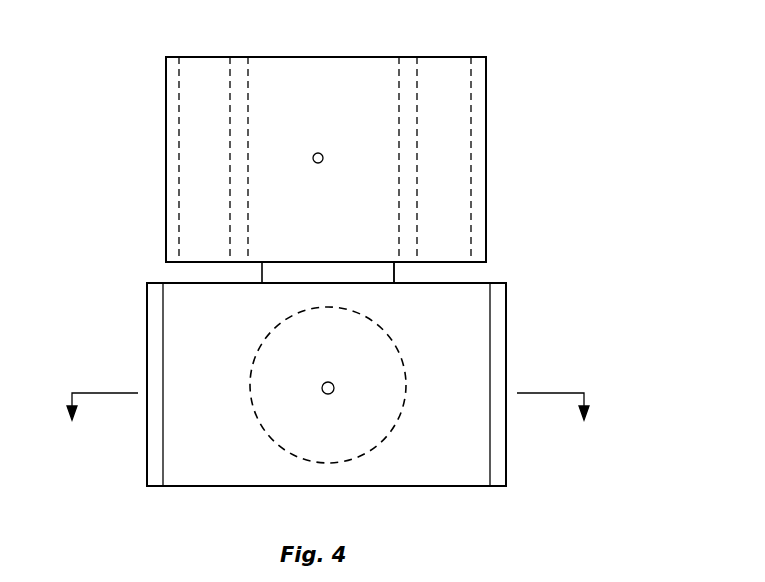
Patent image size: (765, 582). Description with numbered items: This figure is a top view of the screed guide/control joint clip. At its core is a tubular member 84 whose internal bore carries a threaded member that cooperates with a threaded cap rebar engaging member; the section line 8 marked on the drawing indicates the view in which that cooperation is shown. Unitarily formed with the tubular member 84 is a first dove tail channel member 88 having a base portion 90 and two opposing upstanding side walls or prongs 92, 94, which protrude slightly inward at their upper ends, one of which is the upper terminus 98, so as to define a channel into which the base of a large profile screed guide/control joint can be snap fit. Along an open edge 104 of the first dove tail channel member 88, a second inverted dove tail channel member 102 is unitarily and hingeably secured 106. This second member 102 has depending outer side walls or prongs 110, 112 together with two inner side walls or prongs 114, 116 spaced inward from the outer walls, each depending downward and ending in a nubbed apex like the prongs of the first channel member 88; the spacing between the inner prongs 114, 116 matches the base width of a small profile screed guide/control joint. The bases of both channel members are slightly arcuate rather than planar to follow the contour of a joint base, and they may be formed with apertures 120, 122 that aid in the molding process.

The second inverted dove tail channel member 102 is at (138, 123).
The outer side wall or prong 110 is at (165, 70).
The outer side wall or prong 112 is at (487, 133).
The inner side wall or prong 114 is at (238, 57).
The inner side wall or prong 116 is at (409, 57).
The aperture 122 is at (317, 153).
The open edge 104 is at (175, 283).
The hinge 106 is at (397, 270).
The first dove tail channel member 88 is at (124, 318).
The upstanding side wall or prong 92 is at (145, 470).
The upstanding side wall or prong 94 is at (506, 463).
The base portion 90 is at (427, 476).
The tubular member 84 is at (403, 359).
The aperture 120 is at (324, 392).
The section line 8- 8 is at (327, 419).
The upper terminus 98 is at (523, 580).